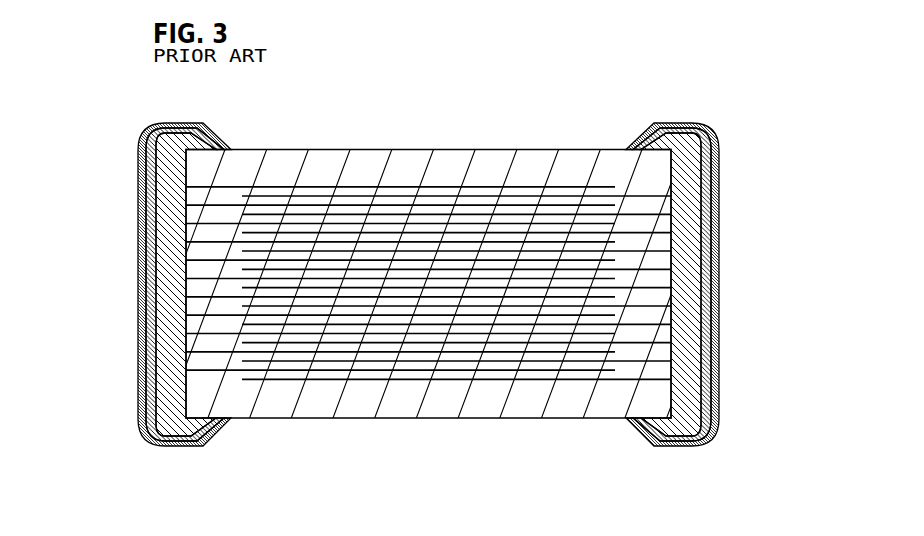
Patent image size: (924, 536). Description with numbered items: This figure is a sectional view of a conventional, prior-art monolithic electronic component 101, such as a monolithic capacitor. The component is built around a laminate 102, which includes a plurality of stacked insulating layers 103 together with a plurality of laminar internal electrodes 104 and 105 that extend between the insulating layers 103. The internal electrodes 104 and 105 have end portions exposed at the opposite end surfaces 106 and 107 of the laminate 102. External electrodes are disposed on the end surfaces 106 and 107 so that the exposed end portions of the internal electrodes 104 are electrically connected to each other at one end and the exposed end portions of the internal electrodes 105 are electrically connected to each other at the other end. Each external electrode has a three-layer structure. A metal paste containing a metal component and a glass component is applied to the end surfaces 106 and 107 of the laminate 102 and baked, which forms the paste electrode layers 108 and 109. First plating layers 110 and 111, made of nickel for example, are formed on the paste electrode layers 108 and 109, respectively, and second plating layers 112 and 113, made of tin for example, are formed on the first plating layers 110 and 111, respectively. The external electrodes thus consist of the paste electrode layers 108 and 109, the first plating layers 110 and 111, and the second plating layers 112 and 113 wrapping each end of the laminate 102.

The monolithic electronic component 101 is at (427, 277).
The laminate 102 is at (457, 277).
The insulating layers 103 is at (657, 157).
The internal electrodes 104 is at (237, 378).
The internal electrodes 105 is at (547, 378).
The end surface 106 is at (124, 284).
The end surface 107 is at (732, 284).
The paste electrode layer 108 is at (160, 222).
The paste electrode layer 109 is at (688, 203).
The first plating layer 110 is at (150, 257).
The first plating layer 111 is at (717, 256).
The second plating layer 112 is at (141, 300).
The second plating layer 113 is at (716, 300).